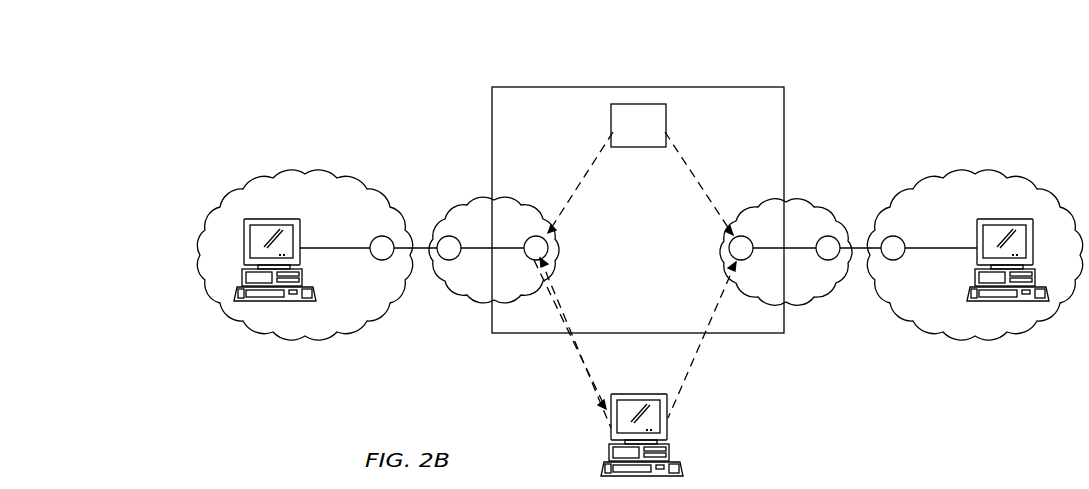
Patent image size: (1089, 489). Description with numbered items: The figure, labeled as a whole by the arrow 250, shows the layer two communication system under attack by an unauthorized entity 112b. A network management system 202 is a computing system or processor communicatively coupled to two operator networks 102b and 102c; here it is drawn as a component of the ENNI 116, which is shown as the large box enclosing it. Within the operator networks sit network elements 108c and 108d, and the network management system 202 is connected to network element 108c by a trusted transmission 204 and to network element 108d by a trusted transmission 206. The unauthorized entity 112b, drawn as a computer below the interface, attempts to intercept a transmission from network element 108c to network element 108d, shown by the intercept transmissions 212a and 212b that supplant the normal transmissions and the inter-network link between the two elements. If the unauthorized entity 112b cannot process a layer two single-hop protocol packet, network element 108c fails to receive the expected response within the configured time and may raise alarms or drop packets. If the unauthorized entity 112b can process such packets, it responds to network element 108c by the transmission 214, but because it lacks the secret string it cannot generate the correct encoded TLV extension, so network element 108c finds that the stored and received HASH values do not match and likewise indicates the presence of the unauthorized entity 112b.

The network system 250 is at (302, 72).
The ENNI 116 is at (763, 115).
The network management system 202 is at (651, 137).
The trusted transmission 204 is at (583, 178).
The trusted transmission 206 is at (688, 164).
The operator network 102b is at (468, 203).
The operator network 102c is at (800, 201).
The network element 108c is at (529, 257).
The network element 108d is at (741, 260).
The intercept transmission 212a is at (563, 304).
The intercept transmission 212b is at (702, 341).
The transmission 214 is at (567, 337).
The unauthorized entity 112b is at (669, 452).